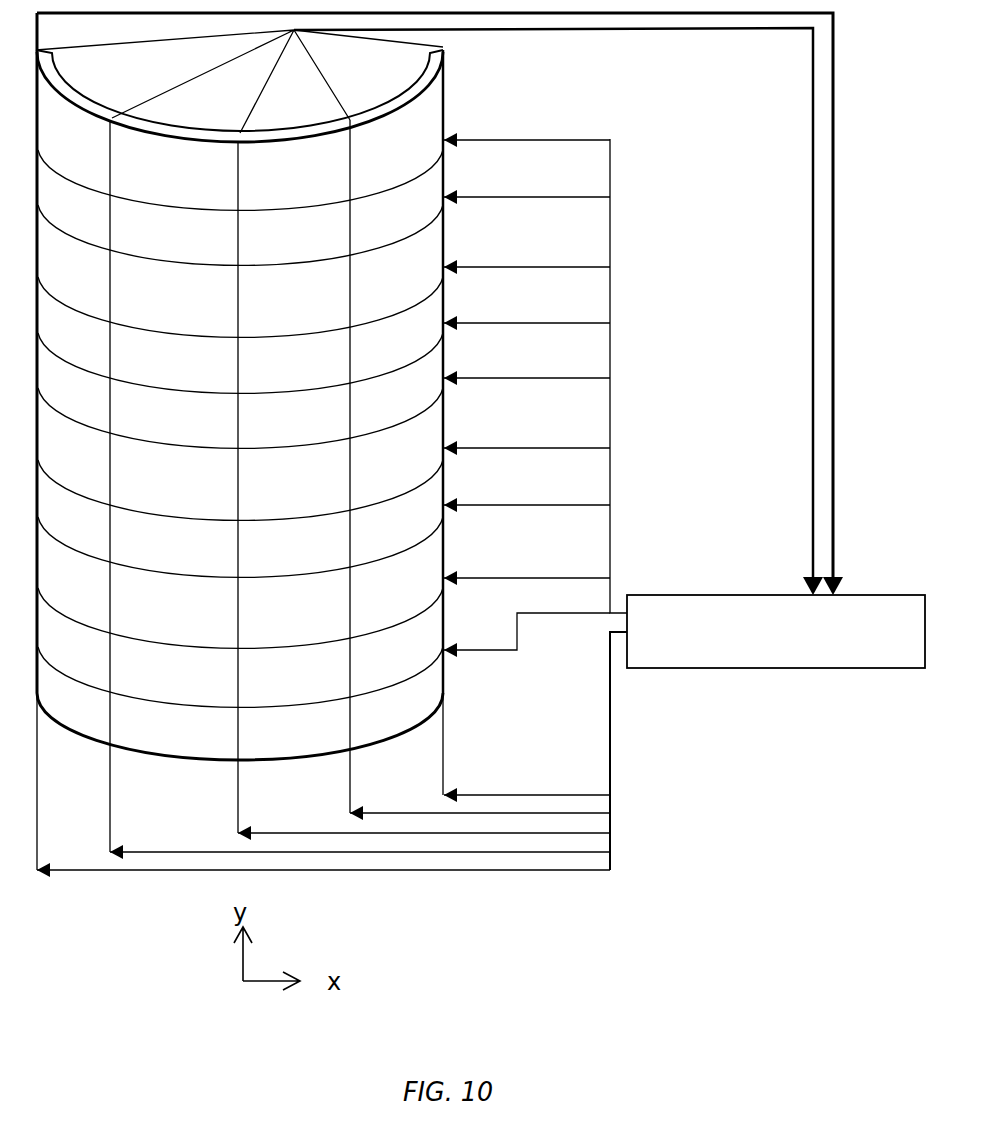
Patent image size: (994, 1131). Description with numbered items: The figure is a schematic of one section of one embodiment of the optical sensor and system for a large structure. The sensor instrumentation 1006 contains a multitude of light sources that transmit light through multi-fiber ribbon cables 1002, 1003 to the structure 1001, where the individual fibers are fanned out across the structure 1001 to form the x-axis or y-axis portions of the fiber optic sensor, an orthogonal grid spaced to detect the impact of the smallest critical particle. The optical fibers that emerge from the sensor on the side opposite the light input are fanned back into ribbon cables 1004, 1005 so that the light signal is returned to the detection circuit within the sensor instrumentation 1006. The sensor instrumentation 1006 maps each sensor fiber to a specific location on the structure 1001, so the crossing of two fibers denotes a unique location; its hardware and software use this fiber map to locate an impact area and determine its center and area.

The structure 1001 is at (453, 103).
The multi-fiber ribbon cable 1002 is at (625, 193).
The multi-fiber ribbon cable 1003 is at (617, 839).
The ribbon cable 1004 is at (850, 393).
The ribbon cable 1005 is at (803, 420).
The sensor instrumentation 1006 is at (857, 590).